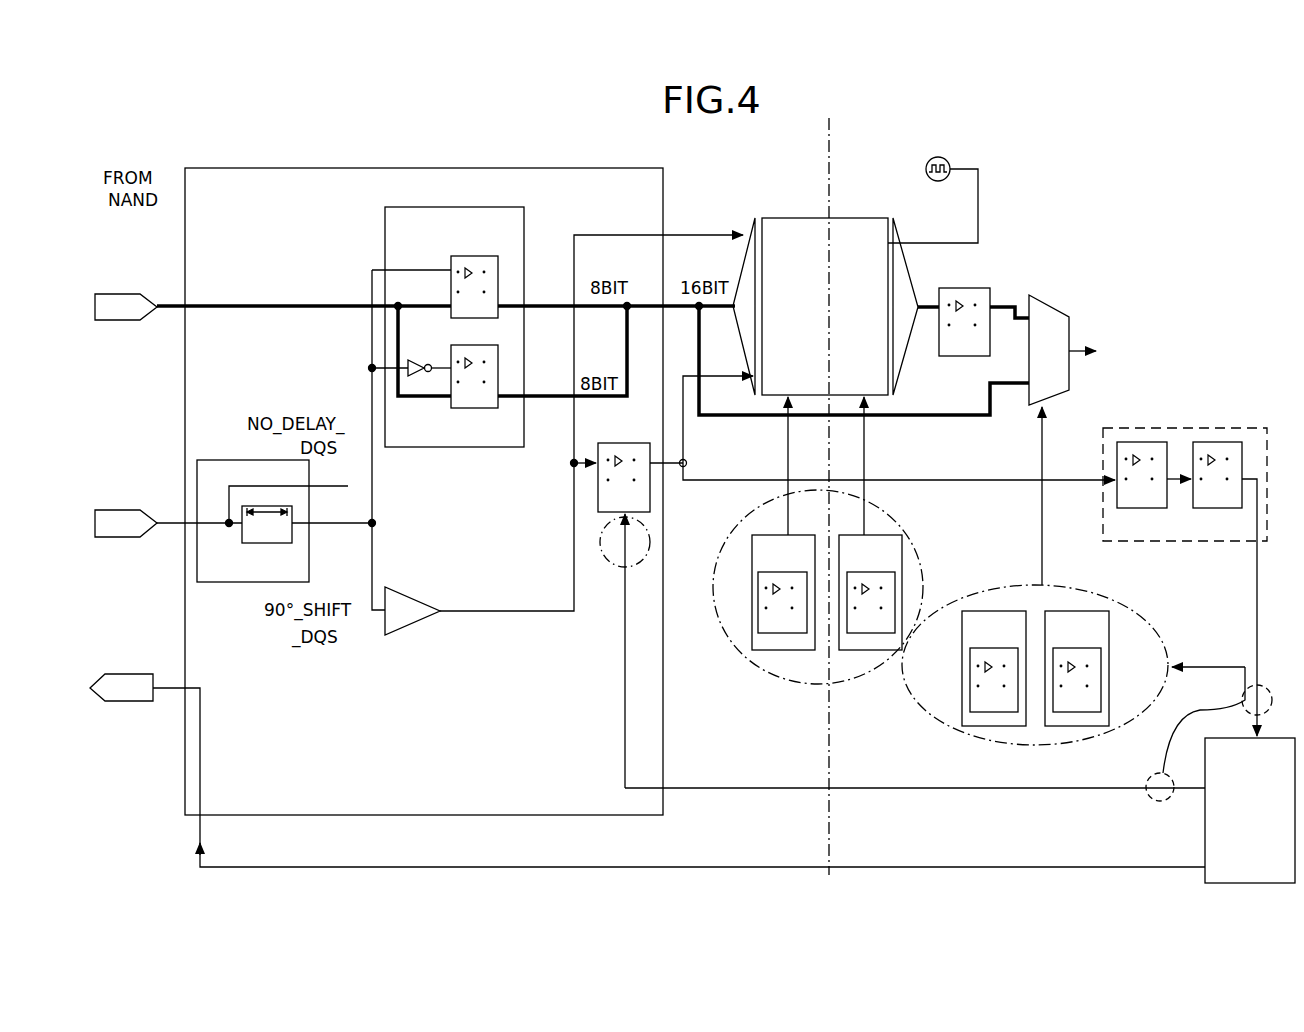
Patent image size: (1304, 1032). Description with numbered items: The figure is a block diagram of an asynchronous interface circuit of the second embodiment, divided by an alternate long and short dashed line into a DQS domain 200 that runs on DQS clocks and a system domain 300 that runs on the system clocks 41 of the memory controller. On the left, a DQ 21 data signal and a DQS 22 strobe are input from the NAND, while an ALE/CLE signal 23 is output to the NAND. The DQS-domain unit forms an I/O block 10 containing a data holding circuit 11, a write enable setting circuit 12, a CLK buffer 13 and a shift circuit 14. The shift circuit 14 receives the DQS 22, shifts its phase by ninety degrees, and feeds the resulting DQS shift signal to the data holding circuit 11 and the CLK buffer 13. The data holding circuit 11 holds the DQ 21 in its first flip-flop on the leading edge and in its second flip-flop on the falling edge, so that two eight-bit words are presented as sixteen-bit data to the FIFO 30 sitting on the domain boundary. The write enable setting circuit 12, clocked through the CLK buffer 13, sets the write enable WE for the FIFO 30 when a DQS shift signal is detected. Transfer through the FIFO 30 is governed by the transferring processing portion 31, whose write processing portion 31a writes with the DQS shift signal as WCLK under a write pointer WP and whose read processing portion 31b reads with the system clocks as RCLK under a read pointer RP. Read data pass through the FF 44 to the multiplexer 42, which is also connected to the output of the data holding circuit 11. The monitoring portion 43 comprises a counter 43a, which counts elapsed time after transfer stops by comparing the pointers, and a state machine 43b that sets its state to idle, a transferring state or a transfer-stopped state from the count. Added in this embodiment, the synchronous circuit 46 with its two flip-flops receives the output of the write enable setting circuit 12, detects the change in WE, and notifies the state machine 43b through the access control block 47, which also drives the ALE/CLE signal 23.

The I/O block 10 is at (300, 168).
The data holding circuit 11 is at (527, 212).
The write enable setting circuit 12 is at (600, 515).
The CLK buffer 13 is at (409, 636).
The shift circuit 14 is at (221, 582).
The DQ 21 is at (104, 322).
The DQS 22 is at (106, 539).
The ALE/CLE signal 23 is at (115, 703).
The FIFO 30 is at (769, 218).
The transferring processing portion 31 is at (850, 610).
The write processing portion 31a is at (778, 650).
The read processing portion 31b is at (856, 650).
The system clocks 41 is at (926, 164).
The multiplexer 42 is at (1052, 299).
The monitoring portion 43 is at (1056, 688).
The counter 43a is at (985, 745).
The state machine 43b is at (1075, 611).
The FF 44 is at (985, 288).
The synchronous circuit 46 is at (1196, 428).
The access control block 47 is at (1205, 820).
The DQS domain 200 is at (397, 150).
The system domain 300 is at (1155, 200).